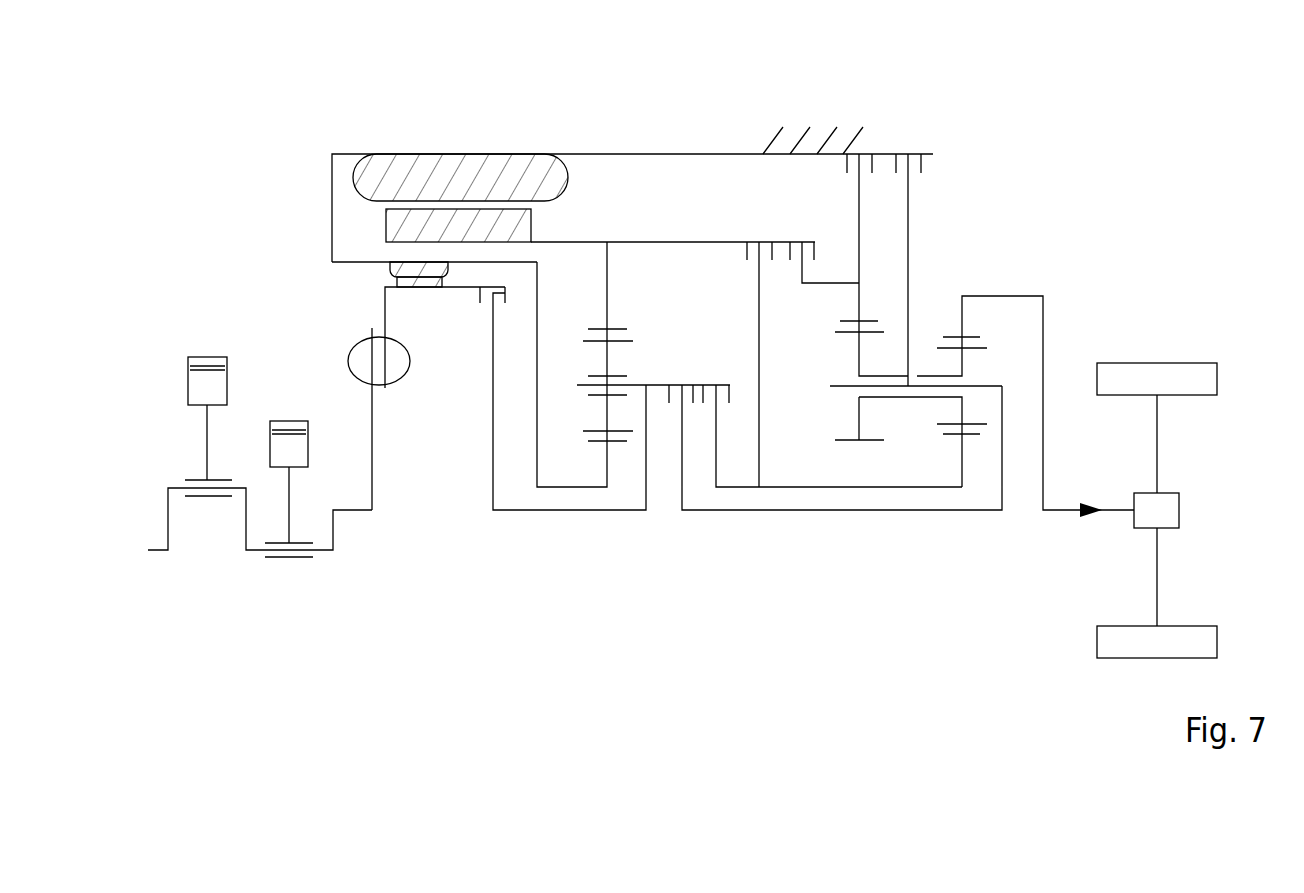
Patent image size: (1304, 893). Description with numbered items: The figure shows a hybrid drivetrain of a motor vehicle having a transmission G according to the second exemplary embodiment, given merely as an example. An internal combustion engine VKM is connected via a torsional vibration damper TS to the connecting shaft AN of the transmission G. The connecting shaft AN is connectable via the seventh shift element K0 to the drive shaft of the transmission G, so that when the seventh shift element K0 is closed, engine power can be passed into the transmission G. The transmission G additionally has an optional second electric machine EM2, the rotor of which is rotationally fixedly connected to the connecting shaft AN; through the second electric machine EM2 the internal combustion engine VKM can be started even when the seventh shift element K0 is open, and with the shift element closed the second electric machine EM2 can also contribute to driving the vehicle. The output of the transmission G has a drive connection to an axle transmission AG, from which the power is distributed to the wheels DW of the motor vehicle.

The second electric machine EM2 is at (362, 275).
The internal combustion engine VKM is at (215, 586).
The torsional vibration damper TS is at (386, 403).
The connecting shaft AN is at (460, 287).
The seventh shift element K0 is at (485, 321).
The transmission G is at (691, 568).
The axle transmission AG is at (1192, 499).
The wheels DW is at (1178, 360).